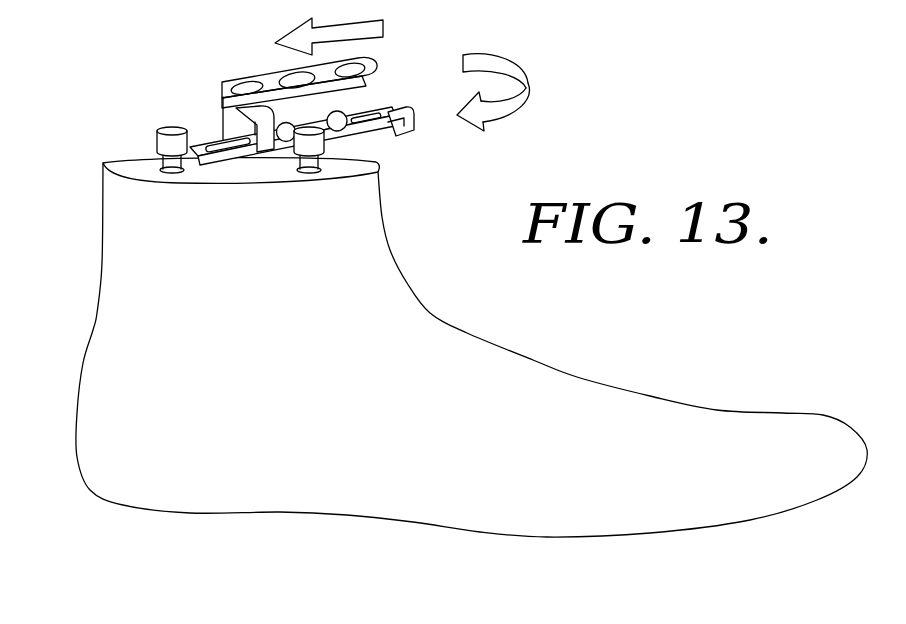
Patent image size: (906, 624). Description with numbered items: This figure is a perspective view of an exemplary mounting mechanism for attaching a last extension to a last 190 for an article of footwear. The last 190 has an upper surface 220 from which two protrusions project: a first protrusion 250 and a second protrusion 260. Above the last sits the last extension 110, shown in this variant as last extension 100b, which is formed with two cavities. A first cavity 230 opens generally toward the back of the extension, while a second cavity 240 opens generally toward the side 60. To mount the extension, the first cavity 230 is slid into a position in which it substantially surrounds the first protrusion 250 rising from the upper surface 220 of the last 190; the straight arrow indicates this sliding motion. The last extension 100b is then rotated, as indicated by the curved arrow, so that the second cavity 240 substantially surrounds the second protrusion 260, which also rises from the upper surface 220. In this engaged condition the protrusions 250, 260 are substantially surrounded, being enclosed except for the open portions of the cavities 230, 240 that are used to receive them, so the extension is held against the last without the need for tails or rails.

The last 190 is at (577, 372).
The upper surface 220 is at (126, 172).
The hinge assembly 100b is at (312, 95).
The last extension 110 is at (264, 74).
The first cavity 230 is at (226, 140).
The second cavity 240 is at (380, 108).
The first protrusion 250 is at (162, 129).
The second protrusion 260 is at (357, 138).
The side 60 is at (375, 82).